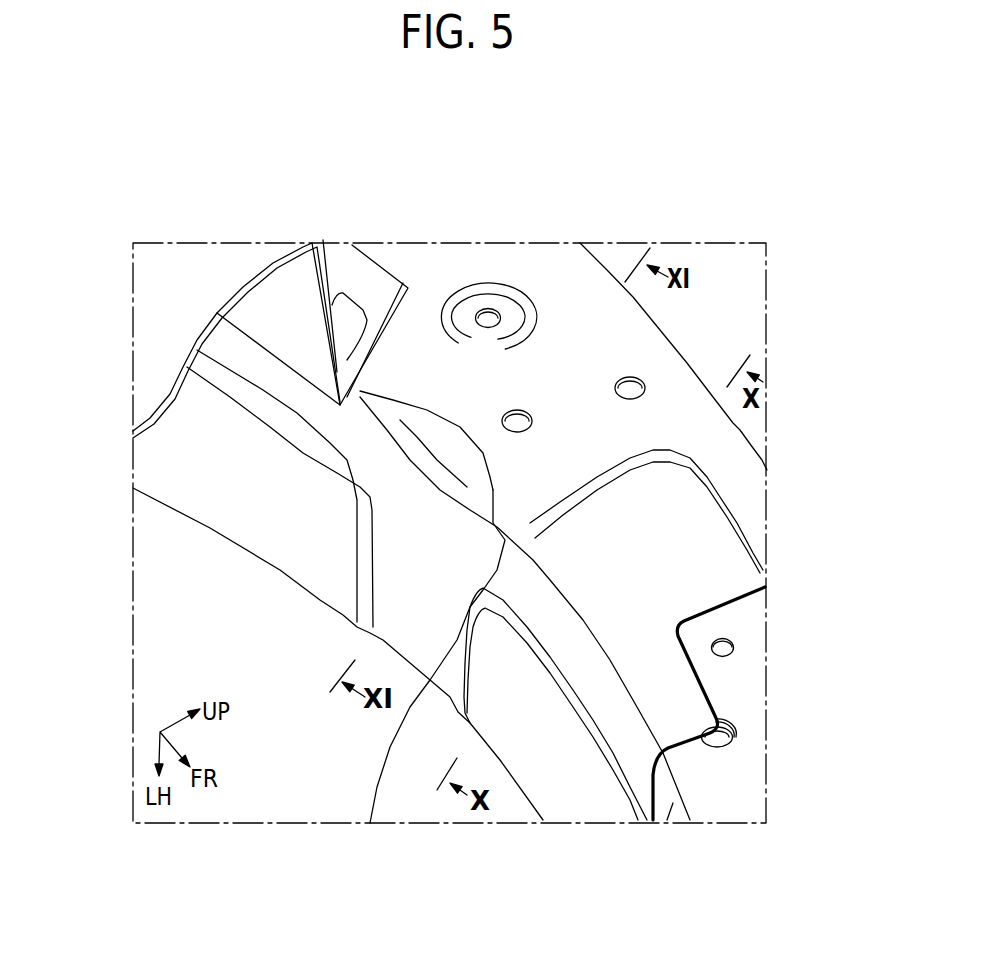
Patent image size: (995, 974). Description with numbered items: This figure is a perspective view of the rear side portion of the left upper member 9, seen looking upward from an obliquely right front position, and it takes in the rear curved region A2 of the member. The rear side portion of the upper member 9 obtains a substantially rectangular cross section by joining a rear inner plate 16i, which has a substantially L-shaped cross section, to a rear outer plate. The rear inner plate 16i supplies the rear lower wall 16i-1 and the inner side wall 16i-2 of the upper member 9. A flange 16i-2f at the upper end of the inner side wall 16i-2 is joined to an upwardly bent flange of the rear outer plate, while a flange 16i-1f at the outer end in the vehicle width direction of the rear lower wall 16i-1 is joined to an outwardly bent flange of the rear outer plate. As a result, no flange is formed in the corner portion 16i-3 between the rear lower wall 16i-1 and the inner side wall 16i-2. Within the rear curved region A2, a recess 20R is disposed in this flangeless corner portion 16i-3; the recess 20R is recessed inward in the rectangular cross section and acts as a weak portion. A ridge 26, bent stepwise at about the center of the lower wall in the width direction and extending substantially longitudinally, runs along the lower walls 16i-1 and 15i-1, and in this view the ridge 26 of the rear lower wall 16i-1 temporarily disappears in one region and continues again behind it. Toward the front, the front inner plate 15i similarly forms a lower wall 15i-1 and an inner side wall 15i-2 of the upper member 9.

The upper member 9 is at (745, 300).
The rear curved region A2 is at (687, 346).
The front inner plate 15i is at (760, 737).
The lower wall 15i-1 is at (667, 820).
The inner side wall 15i-2 is at (743, 678).
The rear inner plate 16i is at (536, 262).
The rear lower wall 16i-1 is at (402, 573).
The flange 16i-1f is at (548, 802).
The inner side wall 16i-2 is at (417, 343).
The flange 16i-2f is at (745, 458).
The corner portion 16i-3 is at (370, 823).
The recess 20R is at (415, 455).
The ridge 26 is at (258, 403).